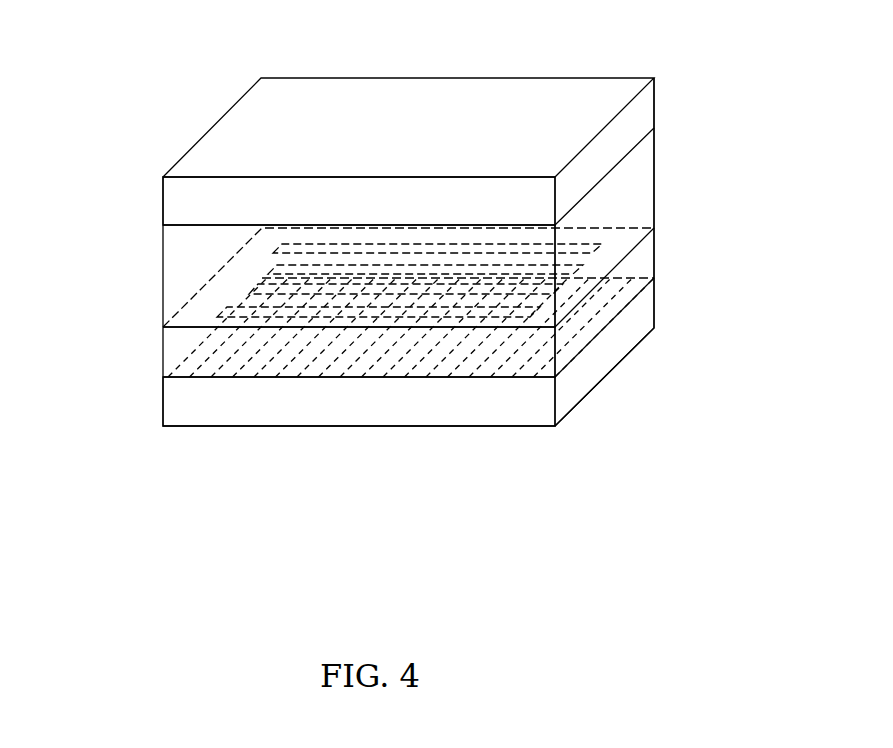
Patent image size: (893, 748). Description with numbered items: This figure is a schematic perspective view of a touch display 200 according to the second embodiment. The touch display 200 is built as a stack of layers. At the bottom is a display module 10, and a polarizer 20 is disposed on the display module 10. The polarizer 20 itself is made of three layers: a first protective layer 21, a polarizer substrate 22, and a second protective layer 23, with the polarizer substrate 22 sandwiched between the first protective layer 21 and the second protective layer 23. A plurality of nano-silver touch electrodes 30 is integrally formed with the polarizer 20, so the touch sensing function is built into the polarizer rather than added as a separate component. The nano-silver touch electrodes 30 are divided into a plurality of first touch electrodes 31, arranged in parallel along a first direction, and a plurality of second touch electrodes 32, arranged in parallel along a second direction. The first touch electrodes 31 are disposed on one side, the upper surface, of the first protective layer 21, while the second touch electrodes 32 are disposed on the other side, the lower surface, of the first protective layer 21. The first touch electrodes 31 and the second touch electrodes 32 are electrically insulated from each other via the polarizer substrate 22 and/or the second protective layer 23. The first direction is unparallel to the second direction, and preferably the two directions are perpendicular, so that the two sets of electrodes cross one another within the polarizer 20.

The touch display 200 is at (391, 219).
The display module 10 is at (642, 320).
The polarizer 20 is at (468, 227).
The first protective layer 21 is at (443, 302).
The polarizer substrate 22 is at (640, 197).
The second protective layer 23 is at (640, 117).
The nano-silver touch electrodes 30 is at (332, 302).
The first touch electrodes 31 is at (222, 362).
The second touch electrodes 32 is at (268, 268).